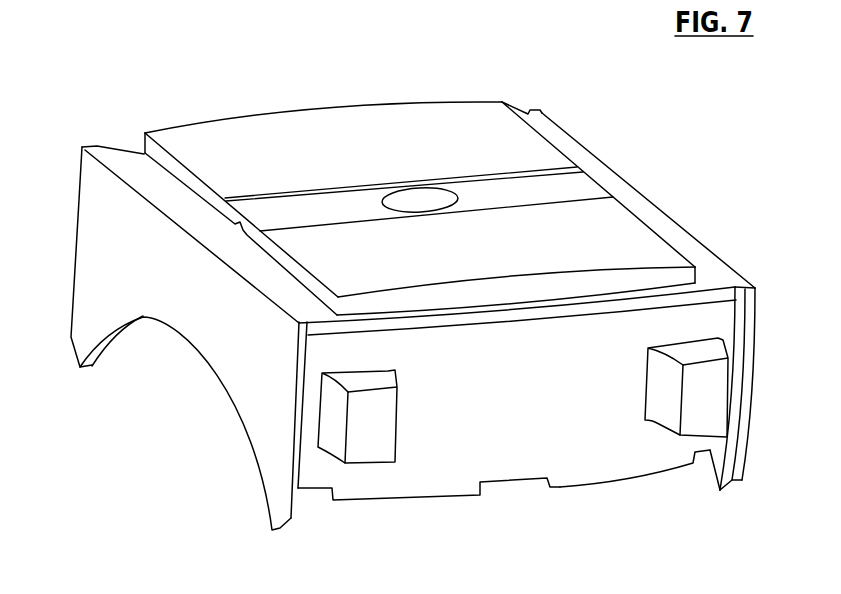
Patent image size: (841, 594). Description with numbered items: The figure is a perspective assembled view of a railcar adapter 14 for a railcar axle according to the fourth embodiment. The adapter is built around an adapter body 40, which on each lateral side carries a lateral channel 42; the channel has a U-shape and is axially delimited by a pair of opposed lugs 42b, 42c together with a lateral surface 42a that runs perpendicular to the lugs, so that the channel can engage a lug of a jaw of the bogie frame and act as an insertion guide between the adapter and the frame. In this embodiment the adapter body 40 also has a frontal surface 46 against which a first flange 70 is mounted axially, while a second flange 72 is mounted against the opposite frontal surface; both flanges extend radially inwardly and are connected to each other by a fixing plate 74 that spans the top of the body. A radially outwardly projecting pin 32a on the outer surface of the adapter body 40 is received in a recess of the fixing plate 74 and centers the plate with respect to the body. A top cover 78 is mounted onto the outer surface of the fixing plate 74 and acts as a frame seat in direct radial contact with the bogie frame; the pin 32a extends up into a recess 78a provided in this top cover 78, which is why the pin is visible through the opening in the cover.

The railcar adapter 14 is at (124, 129).
The fixing plate 74 is at (152, 188).
The second flange 72 is at (258, 440).
The top cover 78 is at (382, 115).
The recess 78a is at (423, 196).
The pin 32a is at (440, 197).
The frontal surface 46 is at (742, 371).
The first flange 70 is at (742, 452).
The lateral channel 42 is at (478, 433).
The adapter body 40 is at (543, 468).
The lateral surface 42a is at (586, 413).
The lug 42b is at (710, 418).
The lug 42c is at (377, 463).